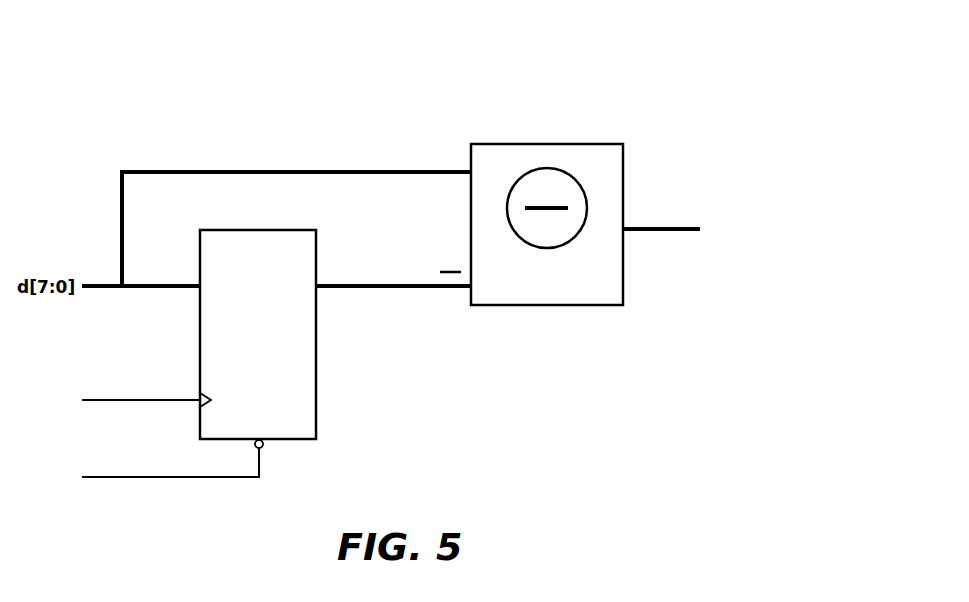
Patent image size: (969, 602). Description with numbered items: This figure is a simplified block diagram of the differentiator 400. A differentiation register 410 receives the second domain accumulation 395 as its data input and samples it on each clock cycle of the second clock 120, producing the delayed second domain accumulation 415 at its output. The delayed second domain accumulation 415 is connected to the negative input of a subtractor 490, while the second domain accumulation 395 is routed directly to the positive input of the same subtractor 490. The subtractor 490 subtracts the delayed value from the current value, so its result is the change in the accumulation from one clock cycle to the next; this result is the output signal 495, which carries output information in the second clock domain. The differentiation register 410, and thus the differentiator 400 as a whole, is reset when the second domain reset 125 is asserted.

The differentiator 400 is at (168, 68).
The differentiation register 410 is at (258, 339).
The second domain accumulation 395 is at (163, 171).
The delayed second domain accumulation 415 is at (415, 290).
The second clock 120 is at (152, 403).
The second domain reset 125 is at (152, 479).
The subtractor 490 is at (531, 221).
The output signal 495 is at (660, 228).